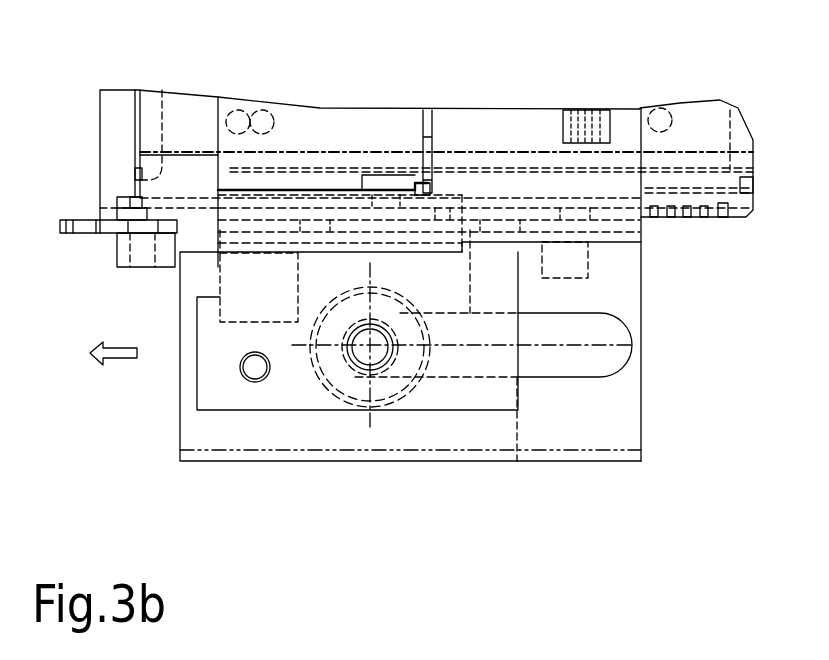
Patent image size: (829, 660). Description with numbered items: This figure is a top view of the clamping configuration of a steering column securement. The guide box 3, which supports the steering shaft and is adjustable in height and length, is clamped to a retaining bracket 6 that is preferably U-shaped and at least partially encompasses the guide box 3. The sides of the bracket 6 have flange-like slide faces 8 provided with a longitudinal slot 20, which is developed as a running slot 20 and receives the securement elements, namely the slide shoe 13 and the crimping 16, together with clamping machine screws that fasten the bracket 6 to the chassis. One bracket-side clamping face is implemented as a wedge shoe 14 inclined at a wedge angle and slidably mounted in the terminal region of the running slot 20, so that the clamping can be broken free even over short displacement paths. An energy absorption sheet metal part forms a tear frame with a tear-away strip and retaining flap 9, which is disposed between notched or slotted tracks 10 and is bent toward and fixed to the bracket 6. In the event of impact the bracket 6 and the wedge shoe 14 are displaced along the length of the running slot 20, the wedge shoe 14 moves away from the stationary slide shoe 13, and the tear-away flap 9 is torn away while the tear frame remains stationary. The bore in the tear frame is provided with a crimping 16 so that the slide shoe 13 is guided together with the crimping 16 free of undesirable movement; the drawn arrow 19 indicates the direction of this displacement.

The guide box 3 is at (693, 130).
The retaining bracket 6 is at (533, 130).
The flange-like slide face 8 is at (555, 417).
The tear-away flap 9 is at (432, 125).
The notched or slotted tracks 10 is at (313, 190).
The slide shoe 13 is at (418, 406).
The wedge shoe 14 is at (383, 385).
The crimping 16 is at (357, 365).
The direction arrow 19 is at (120, 353).
The running slot 20 is at (597, 333).